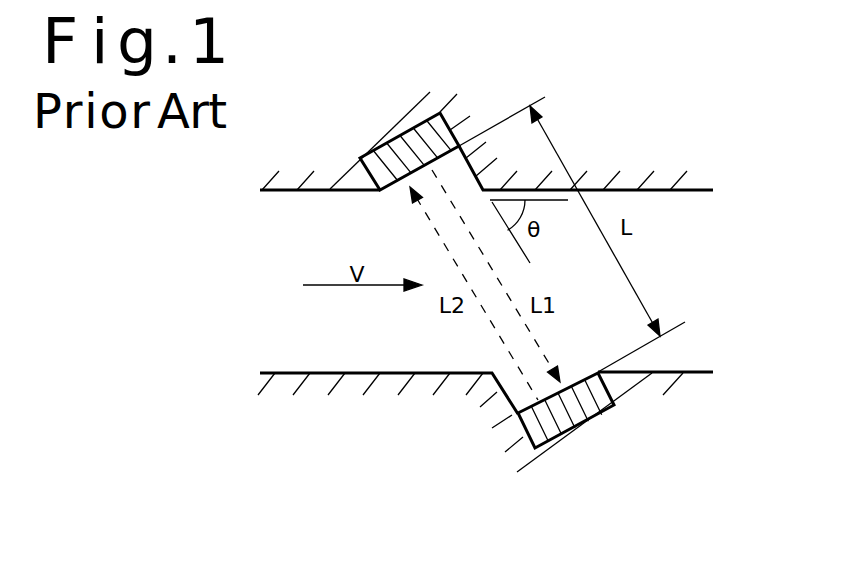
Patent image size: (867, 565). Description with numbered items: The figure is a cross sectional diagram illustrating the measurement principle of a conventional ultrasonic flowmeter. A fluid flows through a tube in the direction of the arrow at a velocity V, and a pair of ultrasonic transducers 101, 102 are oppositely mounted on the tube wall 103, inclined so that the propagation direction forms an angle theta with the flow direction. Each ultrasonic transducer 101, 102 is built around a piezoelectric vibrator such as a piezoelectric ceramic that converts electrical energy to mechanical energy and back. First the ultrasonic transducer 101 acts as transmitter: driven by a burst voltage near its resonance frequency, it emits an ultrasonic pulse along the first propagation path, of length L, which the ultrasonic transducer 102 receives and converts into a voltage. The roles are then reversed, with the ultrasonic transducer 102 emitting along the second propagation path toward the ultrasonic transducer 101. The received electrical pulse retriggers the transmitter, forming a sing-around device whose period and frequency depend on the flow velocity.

The ultrasonic transducer 101 is at (378, 158).
The ultrasonic transducer 102 is at (580, 410).
The tube wall 103 is at (660, 191).